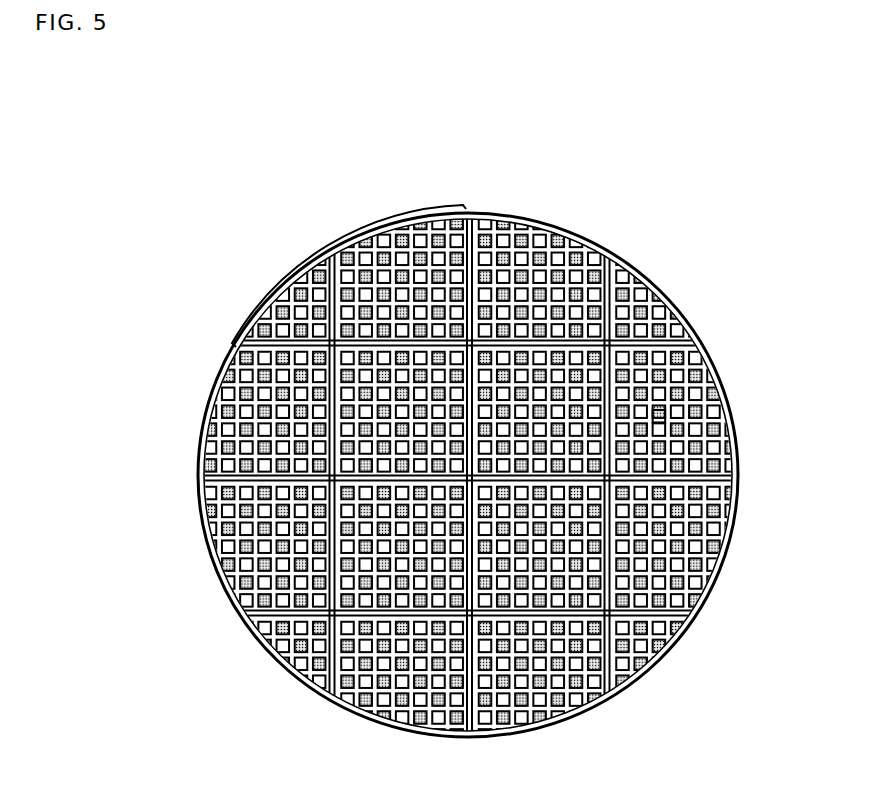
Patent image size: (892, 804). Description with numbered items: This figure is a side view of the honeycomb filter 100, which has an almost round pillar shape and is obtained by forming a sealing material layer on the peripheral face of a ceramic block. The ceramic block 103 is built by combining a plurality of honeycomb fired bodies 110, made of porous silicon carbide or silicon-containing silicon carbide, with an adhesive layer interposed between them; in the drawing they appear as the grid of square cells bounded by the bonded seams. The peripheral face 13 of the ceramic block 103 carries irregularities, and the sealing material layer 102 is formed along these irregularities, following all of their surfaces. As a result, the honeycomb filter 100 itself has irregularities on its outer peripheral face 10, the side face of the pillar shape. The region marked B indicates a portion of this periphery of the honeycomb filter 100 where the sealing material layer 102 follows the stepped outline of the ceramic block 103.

The honeycomb filter 100 is at (590, 202).
The peripheral face 10 is at (617, 257).
The peripheral face 13 is at (669, 302).
The honeycomb fired body 110 is at (660, 413).
The sealing material layer 102 is at (531, 228).
The ceramic block 103 is at (197, 393).
The region B is at (353, 222).